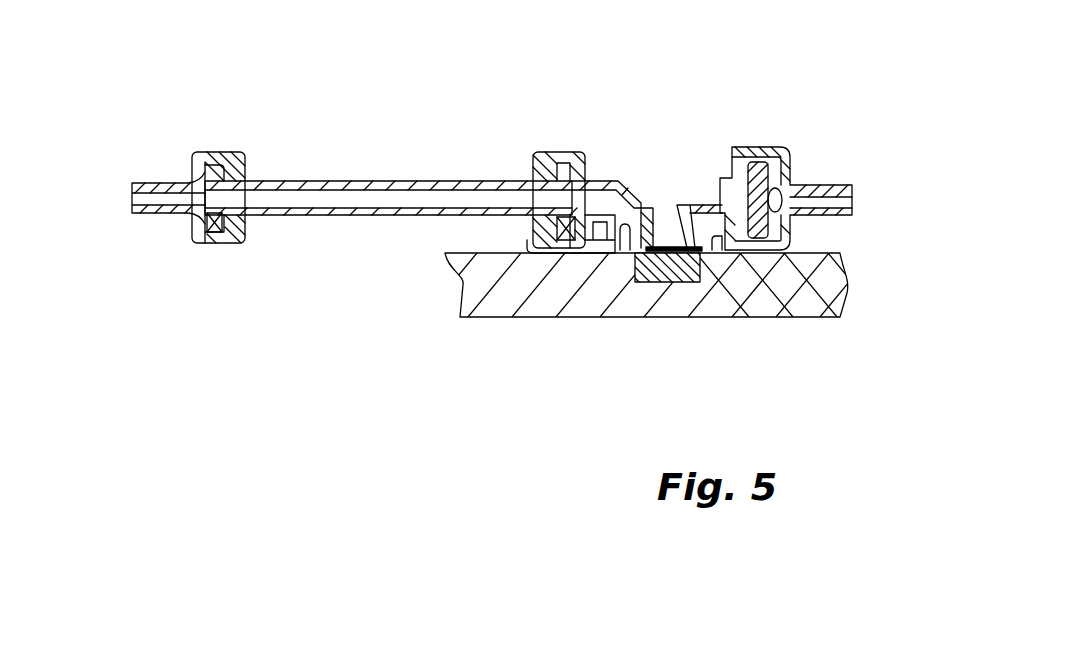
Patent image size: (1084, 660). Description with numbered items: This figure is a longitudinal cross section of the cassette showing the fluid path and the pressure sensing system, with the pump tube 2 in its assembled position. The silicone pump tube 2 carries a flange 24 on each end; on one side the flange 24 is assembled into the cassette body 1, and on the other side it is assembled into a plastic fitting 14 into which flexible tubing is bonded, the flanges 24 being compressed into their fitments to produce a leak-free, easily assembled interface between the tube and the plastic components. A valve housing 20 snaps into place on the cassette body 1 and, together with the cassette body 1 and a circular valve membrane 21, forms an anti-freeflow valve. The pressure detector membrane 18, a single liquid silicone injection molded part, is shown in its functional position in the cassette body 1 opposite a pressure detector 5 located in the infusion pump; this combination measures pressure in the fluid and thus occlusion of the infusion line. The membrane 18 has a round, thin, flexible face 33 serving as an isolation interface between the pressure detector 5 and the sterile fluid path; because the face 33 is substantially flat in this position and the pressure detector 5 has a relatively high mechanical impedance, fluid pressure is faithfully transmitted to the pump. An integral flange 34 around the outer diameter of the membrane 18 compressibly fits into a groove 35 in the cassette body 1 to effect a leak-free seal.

The cassette body 1 is at (630, 178).
The pump tube 2 is at (387, 181).
The pressure detector 5 is at (669, 268).
The plastic fitting 14 is at (225, 152).
The pressure detector membrane 18 is at (627, 253).
The valve housing 20 is at (745, 147).
The circular valve membrane 21 is at (840, 305).
The flange 24 is at (200, 222).
The flexible face 33 is at (702, 255).
The integral flange 34 is at (730, 252).
The groove 35 is at (768, 177).